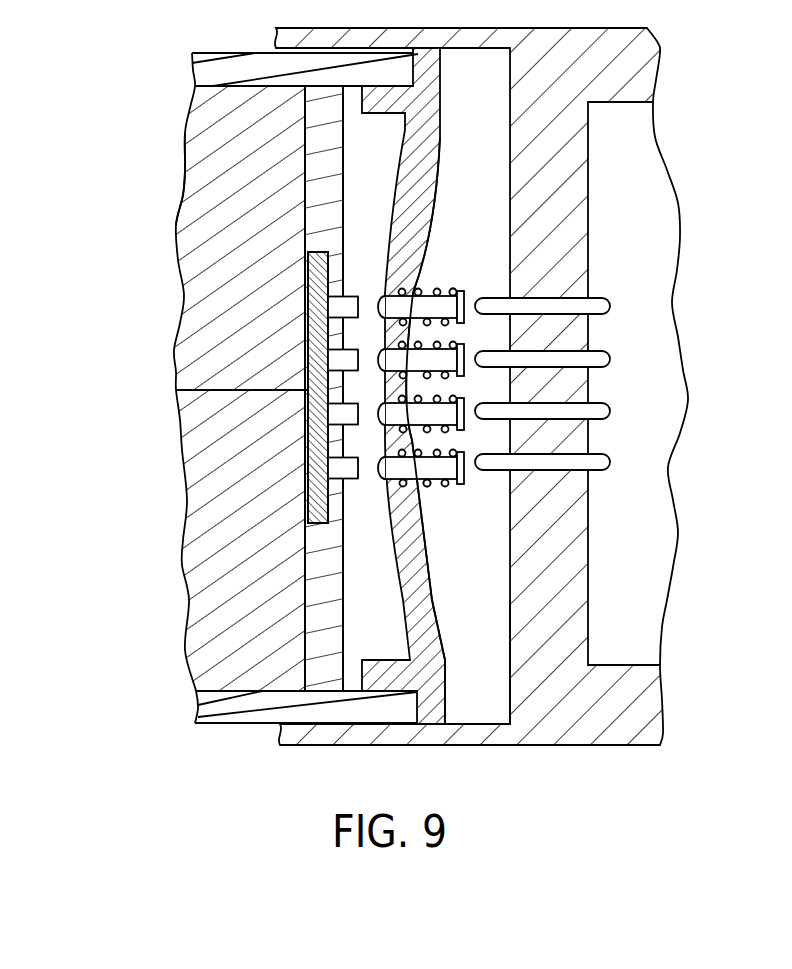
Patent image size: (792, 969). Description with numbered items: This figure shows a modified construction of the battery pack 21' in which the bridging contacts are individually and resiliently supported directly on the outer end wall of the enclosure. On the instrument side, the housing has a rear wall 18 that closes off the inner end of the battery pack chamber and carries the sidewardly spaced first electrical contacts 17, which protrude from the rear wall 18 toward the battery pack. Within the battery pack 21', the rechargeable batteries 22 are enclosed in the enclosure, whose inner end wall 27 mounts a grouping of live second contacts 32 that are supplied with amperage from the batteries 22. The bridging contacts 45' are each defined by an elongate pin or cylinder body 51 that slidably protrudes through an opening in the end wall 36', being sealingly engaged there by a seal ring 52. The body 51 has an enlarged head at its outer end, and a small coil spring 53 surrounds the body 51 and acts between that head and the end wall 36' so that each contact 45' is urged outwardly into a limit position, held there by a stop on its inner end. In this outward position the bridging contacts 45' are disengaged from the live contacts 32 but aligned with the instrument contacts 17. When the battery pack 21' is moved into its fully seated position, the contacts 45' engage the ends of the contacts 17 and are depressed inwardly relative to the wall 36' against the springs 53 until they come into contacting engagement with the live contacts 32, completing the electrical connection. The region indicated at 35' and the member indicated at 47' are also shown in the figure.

The first electrical contacts 17 is at (553, 307).
The rear wall 18 is at (572, 186).
The battery pack 21' is at (116, 179).
The rechargeable batteries 22 is at (205, 357).
The inner end wall 27 is at (317, 157).
The second contacts 32 is at (343, 307).
The cavity 35' is at (523, 696).
The end wall 36' is at (564, 398).
The bridging contacts 45' is at (424, 375).
The insert 47' is at (305, 423).
The pin or cylinder body 51 is at (446, 292).
The seal ring 52 is at (407, 481).
The coil spring 53 is at (454, 290).